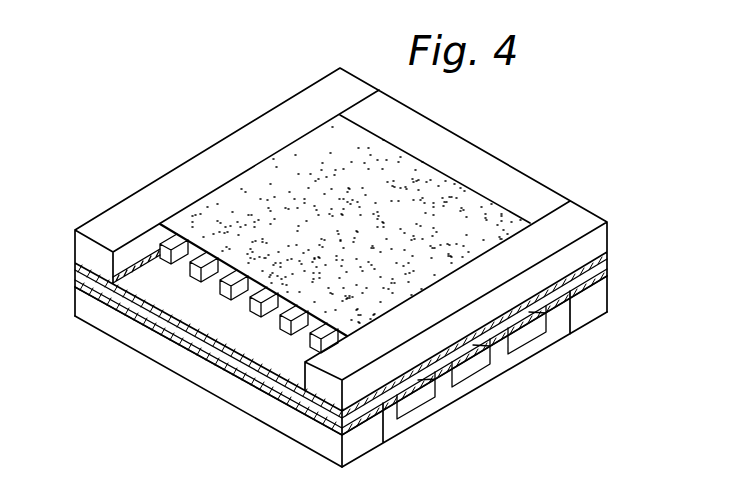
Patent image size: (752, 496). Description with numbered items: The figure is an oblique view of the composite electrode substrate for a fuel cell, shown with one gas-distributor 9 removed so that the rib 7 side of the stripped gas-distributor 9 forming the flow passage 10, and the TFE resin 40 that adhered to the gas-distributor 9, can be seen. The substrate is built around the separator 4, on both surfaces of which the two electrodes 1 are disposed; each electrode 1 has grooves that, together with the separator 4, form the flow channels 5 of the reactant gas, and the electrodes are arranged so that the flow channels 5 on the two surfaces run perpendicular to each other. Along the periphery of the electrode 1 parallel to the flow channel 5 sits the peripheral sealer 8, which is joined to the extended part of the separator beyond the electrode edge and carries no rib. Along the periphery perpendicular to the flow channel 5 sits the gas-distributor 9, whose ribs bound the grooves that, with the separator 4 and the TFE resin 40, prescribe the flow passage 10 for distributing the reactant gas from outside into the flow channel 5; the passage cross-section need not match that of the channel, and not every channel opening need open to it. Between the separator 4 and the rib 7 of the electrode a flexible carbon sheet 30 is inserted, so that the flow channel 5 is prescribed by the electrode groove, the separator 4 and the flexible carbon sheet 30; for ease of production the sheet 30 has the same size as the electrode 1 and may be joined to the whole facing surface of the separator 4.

The electrode 1 is at (402, 167).
The separator 4 is at (75, 273).
The flow channel 5 is at (160, 272).
The rib 7 is at (260, 316).
The peripheral sealer 8 is at (196, 166).
The gas-distributor 9 is at (485, 163).
The flow passage 10 is at (410, 396).
The flexible carbon sheet 30 is at (203, 298).
The TFE resin 40 is at (75, 266).